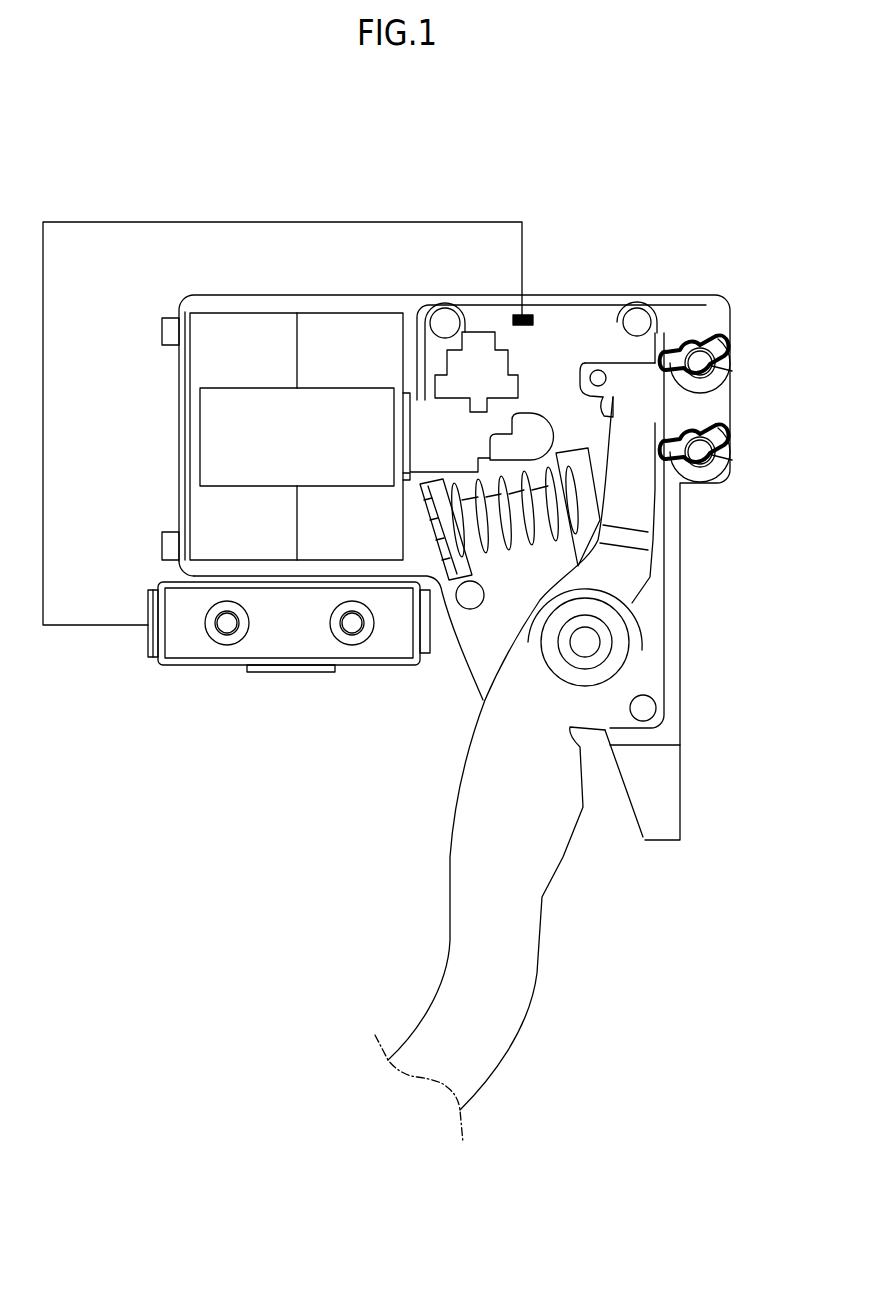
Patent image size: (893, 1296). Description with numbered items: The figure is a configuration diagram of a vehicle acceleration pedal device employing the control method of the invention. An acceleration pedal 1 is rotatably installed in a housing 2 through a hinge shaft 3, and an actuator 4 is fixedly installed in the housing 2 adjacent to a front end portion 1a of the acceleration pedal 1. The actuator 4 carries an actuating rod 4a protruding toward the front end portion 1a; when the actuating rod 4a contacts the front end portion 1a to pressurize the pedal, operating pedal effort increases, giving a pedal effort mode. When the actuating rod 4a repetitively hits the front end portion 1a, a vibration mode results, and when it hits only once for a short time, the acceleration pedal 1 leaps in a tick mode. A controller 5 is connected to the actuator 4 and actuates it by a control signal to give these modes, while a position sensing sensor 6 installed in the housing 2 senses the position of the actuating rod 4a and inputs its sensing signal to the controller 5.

The acceleration pedal 1 is at (542, 897).
The front end portion 1a is at (603, 400).
The housing 2 is at (680, 728).
The hinge shaft 3 is at (585, 642).
The actuator 4 is at (260, 538).
The actuating rod 4a is at (535, 428).
The controller 5 is at (178, 628).
The position sensing sensor 6 is at (531, 313).